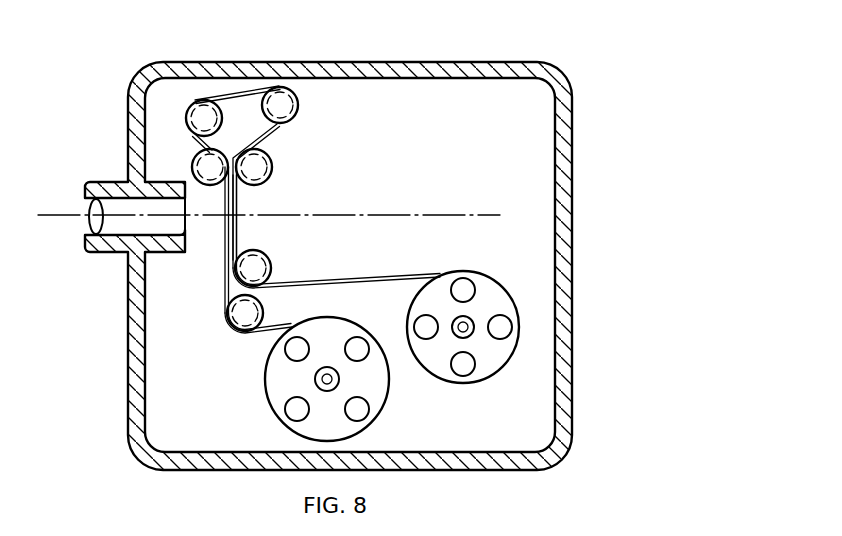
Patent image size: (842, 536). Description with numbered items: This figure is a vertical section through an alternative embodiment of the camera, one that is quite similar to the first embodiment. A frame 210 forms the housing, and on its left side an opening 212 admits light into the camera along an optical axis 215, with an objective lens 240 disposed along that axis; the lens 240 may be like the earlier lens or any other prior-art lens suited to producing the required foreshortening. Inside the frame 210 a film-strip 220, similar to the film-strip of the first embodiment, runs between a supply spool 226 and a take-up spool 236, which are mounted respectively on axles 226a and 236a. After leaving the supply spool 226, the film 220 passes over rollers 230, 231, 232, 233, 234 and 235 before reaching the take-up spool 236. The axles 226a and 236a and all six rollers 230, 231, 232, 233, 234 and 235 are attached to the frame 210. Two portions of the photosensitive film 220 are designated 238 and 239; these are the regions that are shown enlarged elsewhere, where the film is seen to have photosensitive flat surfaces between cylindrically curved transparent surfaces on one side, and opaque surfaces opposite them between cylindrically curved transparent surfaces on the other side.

The frame 210 is at (397, 57).
The opening 212 is at (117, 233).
The optical axis 215 is at (158, 214).
The film-strip 220 is at (381, 275).
The supply spool 226 is at (469, 328).
The axle 226a is at (468, 320).
The roller 230 is at (267, 258).
The roller 231 is at (273, 168).
The roller 232 is at (299, 106).
The roller 233 is at (191, 126).
The roller 234 is at (206, 167).
The roller 235 is at (264, 311).
The take-up spool 236 is at (352, 379).
The axle 236a is at (341, 380).
The portion of photosensitive film 238 is at (225, 222).
The portion of photosensitive film 239 is at (238, 205).
The objective lens 240 is at (87, 222).